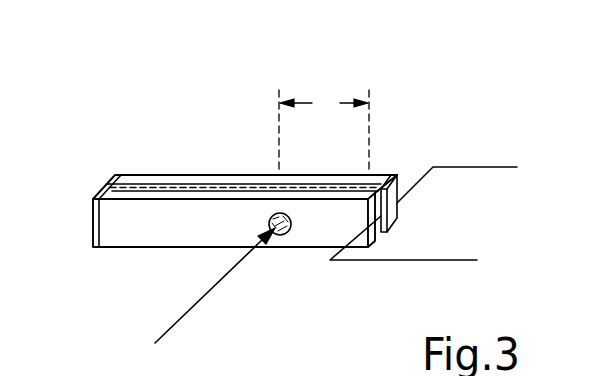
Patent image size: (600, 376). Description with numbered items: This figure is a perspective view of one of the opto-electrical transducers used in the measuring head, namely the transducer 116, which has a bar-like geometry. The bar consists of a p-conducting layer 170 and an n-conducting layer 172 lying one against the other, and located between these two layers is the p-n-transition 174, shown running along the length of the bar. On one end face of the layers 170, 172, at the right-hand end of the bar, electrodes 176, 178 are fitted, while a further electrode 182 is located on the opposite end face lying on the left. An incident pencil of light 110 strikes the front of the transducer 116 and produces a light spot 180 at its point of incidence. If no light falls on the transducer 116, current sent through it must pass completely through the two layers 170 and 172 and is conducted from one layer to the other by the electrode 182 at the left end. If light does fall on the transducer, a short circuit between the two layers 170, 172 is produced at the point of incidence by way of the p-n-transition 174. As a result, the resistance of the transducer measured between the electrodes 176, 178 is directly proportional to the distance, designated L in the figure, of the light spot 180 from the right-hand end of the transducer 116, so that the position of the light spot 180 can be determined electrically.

The transducer 116 is at (128, 76).
The p-conducting layer 170 is at (137, 197).
The n-conducting layer 172 is at (230, 181).
The p-n-transition 174 is at (195, 187).
The electrode 176 is at (380, 235).
The electrode 178 is at (398, 187).
The light spot 180 is at (278, 237).
The electrode 182 is at (93, 240).
The pencil of light 110 is at (195, 308).